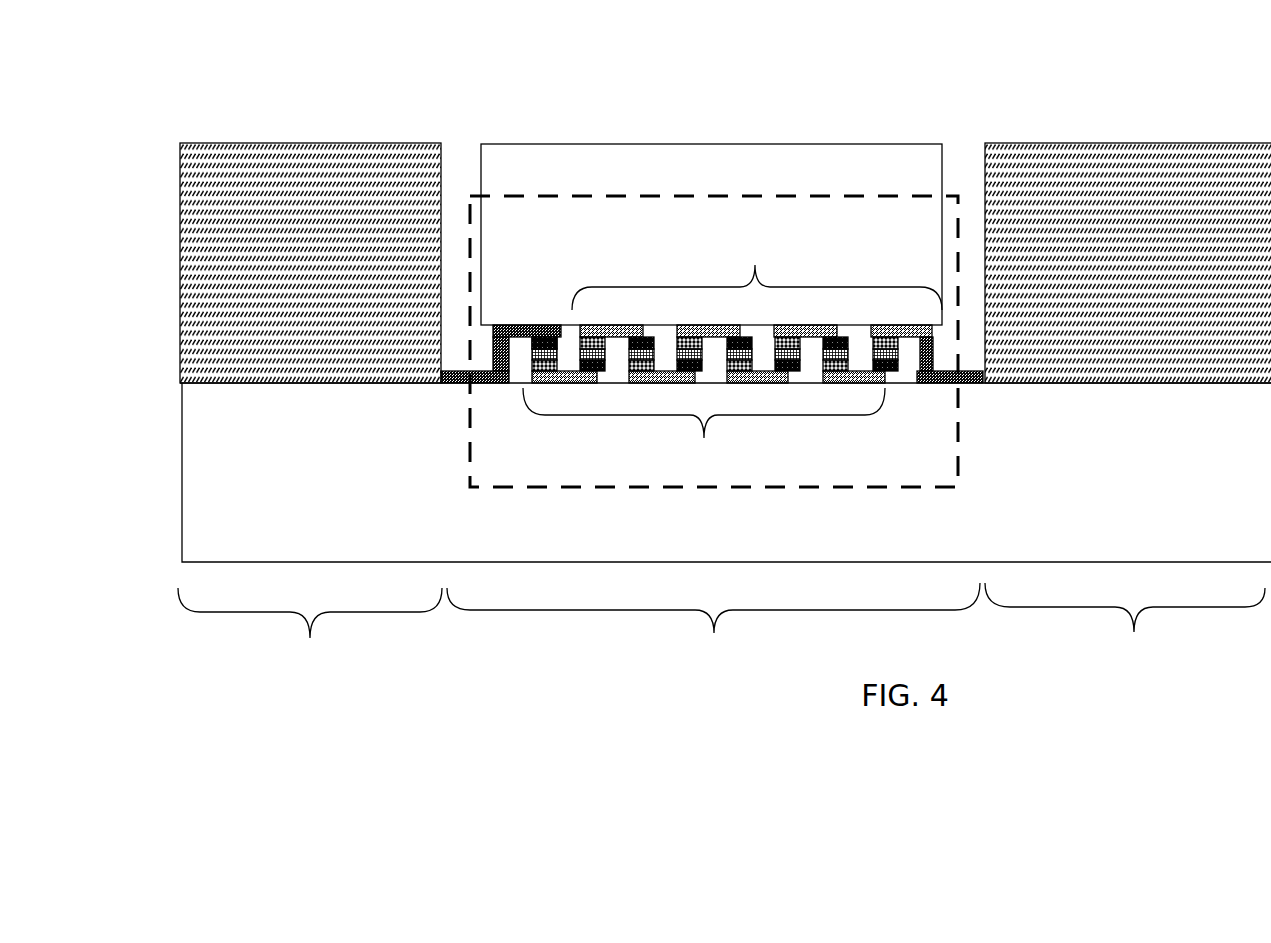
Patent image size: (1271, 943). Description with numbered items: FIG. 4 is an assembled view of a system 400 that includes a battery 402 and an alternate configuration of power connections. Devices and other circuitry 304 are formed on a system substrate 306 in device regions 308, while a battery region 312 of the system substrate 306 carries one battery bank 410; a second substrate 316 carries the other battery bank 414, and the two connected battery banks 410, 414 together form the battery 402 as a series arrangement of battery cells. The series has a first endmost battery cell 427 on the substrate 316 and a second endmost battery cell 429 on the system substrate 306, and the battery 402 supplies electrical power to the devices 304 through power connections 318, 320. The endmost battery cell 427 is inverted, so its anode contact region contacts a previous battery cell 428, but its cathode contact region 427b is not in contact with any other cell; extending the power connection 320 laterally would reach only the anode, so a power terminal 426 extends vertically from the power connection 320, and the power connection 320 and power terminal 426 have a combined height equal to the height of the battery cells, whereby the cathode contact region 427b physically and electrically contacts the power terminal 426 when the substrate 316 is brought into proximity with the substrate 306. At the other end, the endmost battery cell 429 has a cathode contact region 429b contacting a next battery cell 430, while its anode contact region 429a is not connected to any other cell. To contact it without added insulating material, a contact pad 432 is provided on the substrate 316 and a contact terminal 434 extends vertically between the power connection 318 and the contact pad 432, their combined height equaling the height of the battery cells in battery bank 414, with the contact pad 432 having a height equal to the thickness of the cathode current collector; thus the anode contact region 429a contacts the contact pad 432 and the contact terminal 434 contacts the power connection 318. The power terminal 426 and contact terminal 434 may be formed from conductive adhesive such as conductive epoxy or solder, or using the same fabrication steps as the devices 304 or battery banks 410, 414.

The devices and other circuitry 304 is at (276, 133).
The system substrate 306 is at (725, 472).
The device regions 308 is at (721, 627).
The battery region 312 is at (713, 625).
The substrate 316 is at (711, 234).
The power connection 318 is at (455, 397).
The power connection 320 is at (978, 392).
The system 400 is at (935, 771).
The battery 402 is at (632, 193).
The battery bank 410 is at (704, 405).
The battery bank 414 is at (757, 287).
The power terminal 426 is at (936, 337).
The endmost battery cell 427 is at (884, 318).
The cathode contact region 427b is at (916, 323).
The previous battery cell 428 is at (849, 394).
The endmost battery cell 429 is at (548, 394).
The anode contact region 429a is at (551, 335).
The cathode contact region 429b is at (585, 382).
The next battery cell 430 is at (616, 318).
The contact pad 432 is at (521, 321).
The contact terminal 434 is at (491, 343).